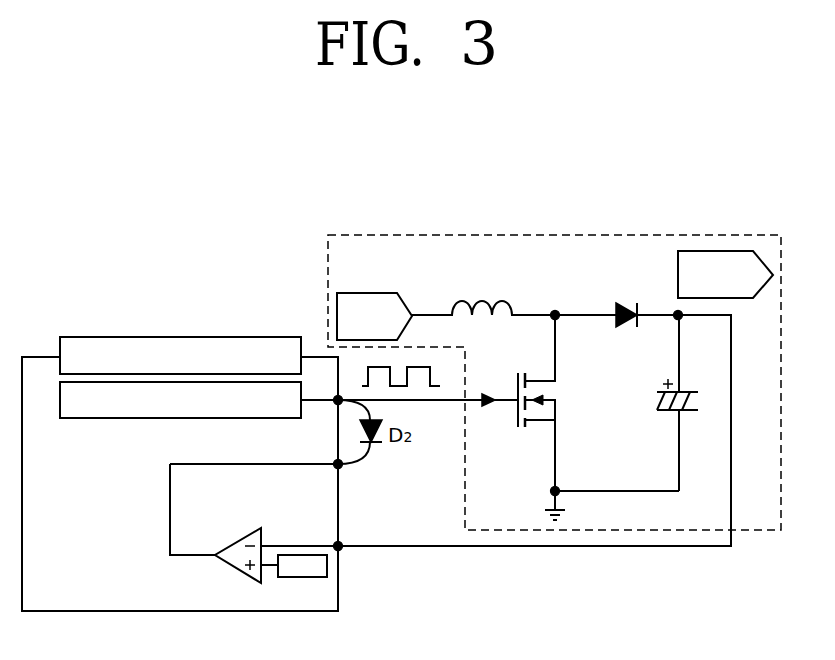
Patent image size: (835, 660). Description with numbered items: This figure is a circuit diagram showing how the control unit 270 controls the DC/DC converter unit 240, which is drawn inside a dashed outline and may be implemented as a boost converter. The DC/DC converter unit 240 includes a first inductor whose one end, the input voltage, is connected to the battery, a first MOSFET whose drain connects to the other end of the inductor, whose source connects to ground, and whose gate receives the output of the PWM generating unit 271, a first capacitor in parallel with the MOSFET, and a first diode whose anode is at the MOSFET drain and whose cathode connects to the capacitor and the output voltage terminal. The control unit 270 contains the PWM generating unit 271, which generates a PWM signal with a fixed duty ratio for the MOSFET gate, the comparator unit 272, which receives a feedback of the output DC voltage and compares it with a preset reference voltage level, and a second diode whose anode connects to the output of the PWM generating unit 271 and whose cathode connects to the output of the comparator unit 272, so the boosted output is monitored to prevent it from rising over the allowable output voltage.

The DC/DC converter unit 240 is at (740, 234).
The control unit 270 is at (107, 336).
The PWM generating unit 271 is at (107, 419).
The comparator unit 272 is at (238, 572).